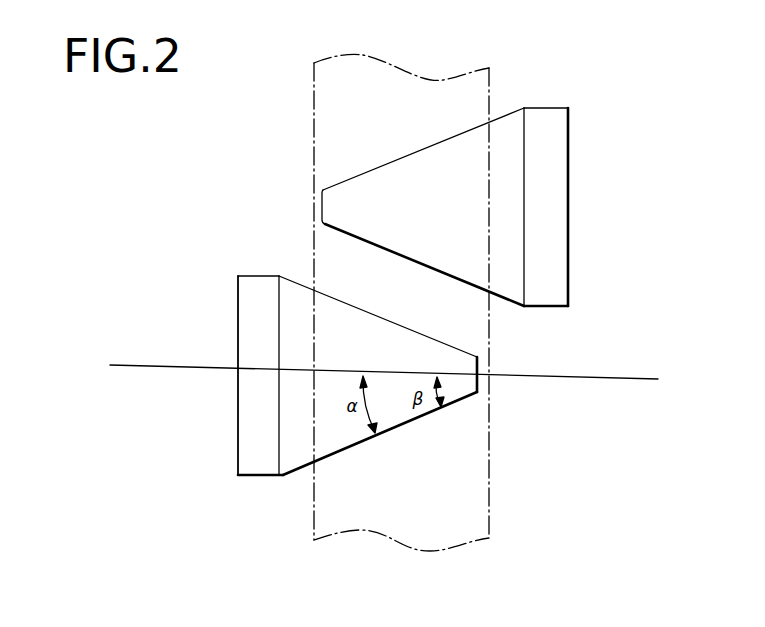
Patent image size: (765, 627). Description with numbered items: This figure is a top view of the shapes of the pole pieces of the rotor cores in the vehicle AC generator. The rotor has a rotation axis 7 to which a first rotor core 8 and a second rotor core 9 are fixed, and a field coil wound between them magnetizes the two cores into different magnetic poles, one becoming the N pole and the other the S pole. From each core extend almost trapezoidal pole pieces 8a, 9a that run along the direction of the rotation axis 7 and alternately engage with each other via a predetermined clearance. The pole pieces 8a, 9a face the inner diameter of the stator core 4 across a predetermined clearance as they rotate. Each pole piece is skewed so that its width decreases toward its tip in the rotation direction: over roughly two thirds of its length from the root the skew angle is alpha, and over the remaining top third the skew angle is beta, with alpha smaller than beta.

The stator core 4 is at (413, 72).
The rotation axis 7 is at (586, 377).
The first rotor core 8 is at (325, 345).
The pole piece 8a is at (290, 293).
The second rotor core 9 is at (472, 177).
The pole piece 9a is at (458, 147).